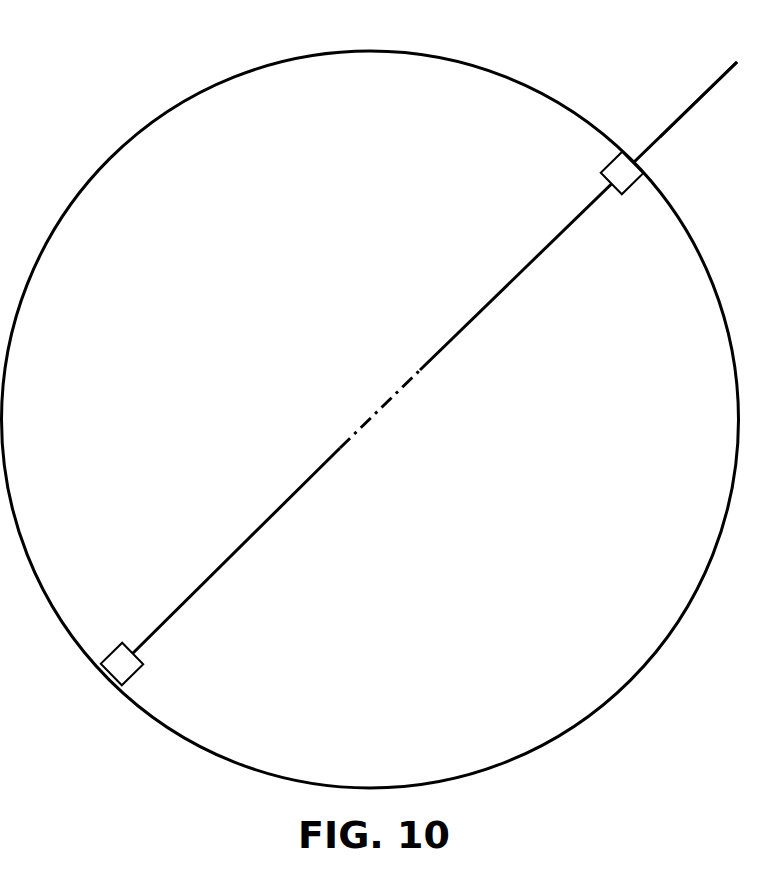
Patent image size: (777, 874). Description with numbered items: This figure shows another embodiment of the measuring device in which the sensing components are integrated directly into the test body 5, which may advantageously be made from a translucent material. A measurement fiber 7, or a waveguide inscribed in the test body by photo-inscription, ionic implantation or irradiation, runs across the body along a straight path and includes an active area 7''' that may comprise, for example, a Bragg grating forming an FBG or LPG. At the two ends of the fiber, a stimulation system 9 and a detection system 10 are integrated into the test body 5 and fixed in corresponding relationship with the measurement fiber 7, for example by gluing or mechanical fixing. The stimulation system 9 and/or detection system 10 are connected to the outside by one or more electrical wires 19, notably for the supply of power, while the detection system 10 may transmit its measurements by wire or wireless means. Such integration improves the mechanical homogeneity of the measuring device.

The test body 5 is at (272, 148).
The measurement fiber 7 is at (429, 363).
The active area 7''' is at (360, 398).
The stimulation system 9 is at (628, 178).
The detection system 10 is at (115, 662).
The electrical wires 19 is at (718, 78).